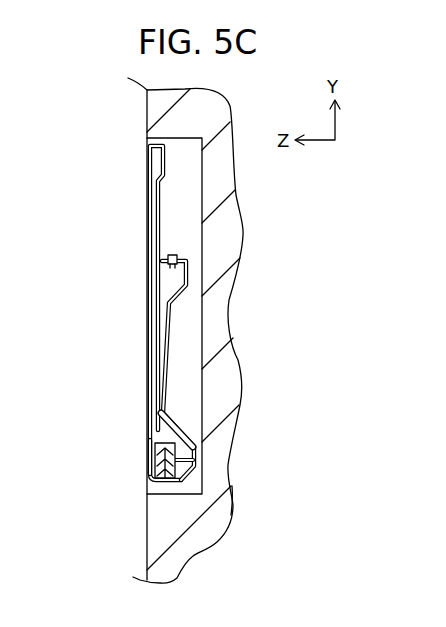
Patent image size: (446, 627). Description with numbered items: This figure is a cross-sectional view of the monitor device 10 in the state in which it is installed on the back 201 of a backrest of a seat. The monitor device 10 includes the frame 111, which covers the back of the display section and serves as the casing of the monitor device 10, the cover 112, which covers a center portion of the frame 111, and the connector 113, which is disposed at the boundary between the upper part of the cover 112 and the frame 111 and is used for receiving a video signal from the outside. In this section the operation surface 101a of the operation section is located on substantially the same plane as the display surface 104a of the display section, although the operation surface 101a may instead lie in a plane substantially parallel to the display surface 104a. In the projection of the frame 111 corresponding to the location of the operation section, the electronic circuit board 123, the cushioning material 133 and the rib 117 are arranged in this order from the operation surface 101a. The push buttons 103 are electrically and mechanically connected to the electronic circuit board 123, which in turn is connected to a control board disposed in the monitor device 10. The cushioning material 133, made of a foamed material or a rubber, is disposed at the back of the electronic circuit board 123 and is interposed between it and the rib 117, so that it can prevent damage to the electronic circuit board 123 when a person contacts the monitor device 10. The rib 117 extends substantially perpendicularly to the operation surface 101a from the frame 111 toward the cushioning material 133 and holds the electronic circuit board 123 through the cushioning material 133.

The back of a backrest of a seat 201 is at (147, 103).
The monitor device 10 is at (98, 165).
The display surface 104a is at (148, 243).
The connector 113 is at (178, 257).
The cover 112 is at (171, 322).
The frame 111 is at (184, 437).
The operation surface 101a is at (148, 446).
The push buttons 103 is at (154, 460).
The rib 117 is at (196, 481).
The cushioning material 133 is at (175, 495).
The electronic circuit board 123 is at (164, 496).